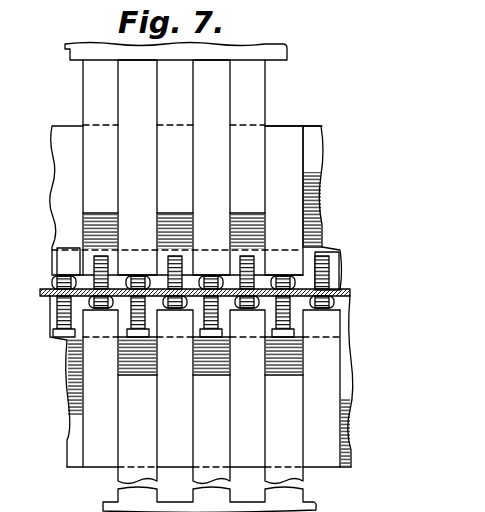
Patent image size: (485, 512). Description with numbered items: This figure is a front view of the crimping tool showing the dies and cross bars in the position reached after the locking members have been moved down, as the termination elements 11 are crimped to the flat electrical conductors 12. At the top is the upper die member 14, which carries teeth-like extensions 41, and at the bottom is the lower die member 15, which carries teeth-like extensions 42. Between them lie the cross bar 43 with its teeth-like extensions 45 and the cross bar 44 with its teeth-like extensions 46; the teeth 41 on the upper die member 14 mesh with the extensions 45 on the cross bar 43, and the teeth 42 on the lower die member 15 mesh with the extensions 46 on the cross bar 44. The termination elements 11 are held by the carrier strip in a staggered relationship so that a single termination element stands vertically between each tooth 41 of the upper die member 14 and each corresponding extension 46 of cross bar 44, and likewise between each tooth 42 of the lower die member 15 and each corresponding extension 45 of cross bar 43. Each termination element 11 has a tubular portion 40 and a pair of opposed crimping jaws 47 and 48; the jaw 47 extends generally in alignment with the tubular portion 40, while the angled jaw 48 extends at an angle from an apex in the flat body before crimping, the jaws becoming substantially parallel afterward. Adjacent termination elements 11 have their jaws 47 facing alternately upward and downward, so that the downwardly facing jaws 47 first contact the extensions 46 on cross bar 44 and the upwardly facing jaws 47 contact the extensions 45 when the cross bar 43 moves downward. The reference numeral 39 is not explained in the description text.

The upper die member 14 is at (67, 52).
The termination element 11 is at (337, 263).
The teeth-like extensions 45 is at (128, 188).
The teeth-like extensions 41 is at (241, 150).
The cross bar 43 is at (314, 165).
The crimping jaw 48 is at (327, 250).
The flat electrical conductor 12 is at (351, 292).
The tubular portion 40 is at (51, 282).
The crimping jaw 47 is at (175, 310).
The cross bar 44 is at (340, 358).
The lower die blocks 39 is at (170, 388).
The teeth-like extensions 46 is at (92, 352).
The teeth-like extensions 42 is at (125, 393).
The lower die member 15 is at (103, 505).